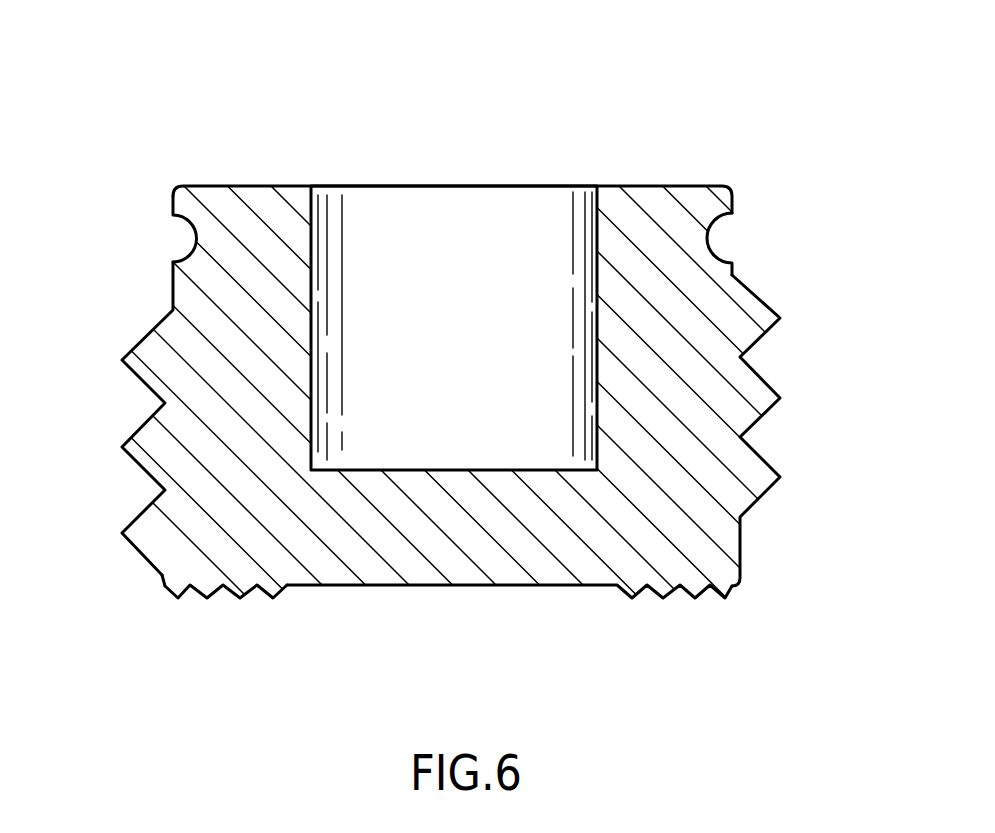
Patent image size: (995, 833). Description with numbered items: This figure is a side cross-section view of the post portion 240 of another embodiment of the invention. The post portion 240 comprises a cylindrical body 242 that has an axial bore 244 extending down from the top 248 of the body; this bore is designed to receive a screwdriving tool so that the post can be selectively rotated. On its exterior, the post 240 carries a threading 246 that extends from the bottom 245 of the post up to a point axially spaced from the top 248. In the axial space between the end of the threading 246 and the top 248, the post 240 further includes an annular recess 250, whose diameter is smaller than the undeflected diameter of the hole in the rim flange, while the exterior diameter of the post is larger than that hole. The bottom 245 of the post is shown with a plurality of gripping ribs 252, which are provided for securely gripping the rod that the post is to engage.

The post portion 240 is at (180, 148).
The cylindrical body 242 is at (692, 298).
The axial bore 244 is at (440, 305).
The bottom 245 is at (464, 609).
The threading 246 is at (758, 448).
The top 248 is at (642, 157).
The annular recess 250 is at (185, 238).
The gripping ribs 252 is at (232, 613).